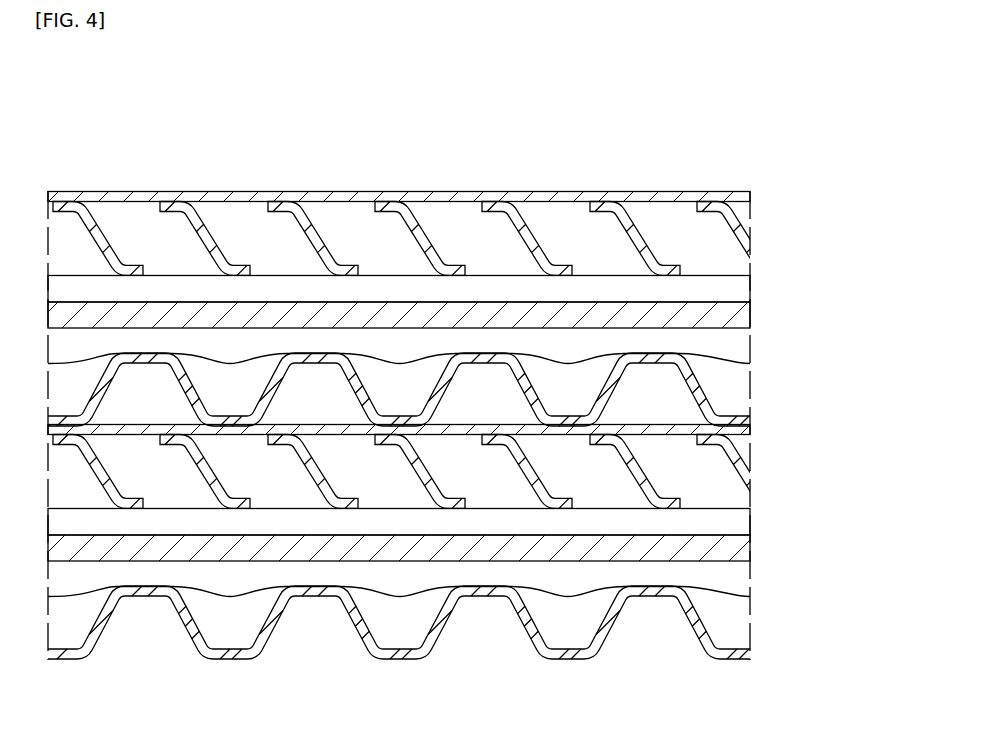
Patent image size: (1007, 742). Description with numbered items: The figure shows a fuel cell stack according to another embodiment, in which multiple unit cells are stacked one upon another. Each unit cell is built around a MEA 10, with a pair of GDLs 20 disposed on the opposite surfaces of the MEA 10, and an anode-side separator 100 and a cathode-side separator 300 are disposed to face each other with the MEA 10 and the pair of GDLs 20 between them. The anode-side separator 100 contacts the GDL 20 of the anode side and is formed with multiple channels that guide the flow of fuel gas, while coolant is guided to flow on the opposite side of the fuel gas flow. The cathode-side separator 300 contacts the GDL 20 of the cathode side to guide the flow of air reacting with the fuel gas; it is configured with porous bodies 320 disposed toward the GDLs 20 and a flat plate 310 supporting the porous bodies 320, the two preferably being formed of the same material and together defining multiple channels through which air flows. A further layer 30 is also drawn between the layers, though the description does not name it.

The MEA 10 is at (492, 313).
The GDL 20 is at (735, 288).
The second layer 30 is at (735, 346).
The anode-side separator 100 is at (702, 387).
The cathode-side separator 300 is at (222, 104).
The flat plate 310 is at (112, 197).
The porous body 320 is at (207, 233).